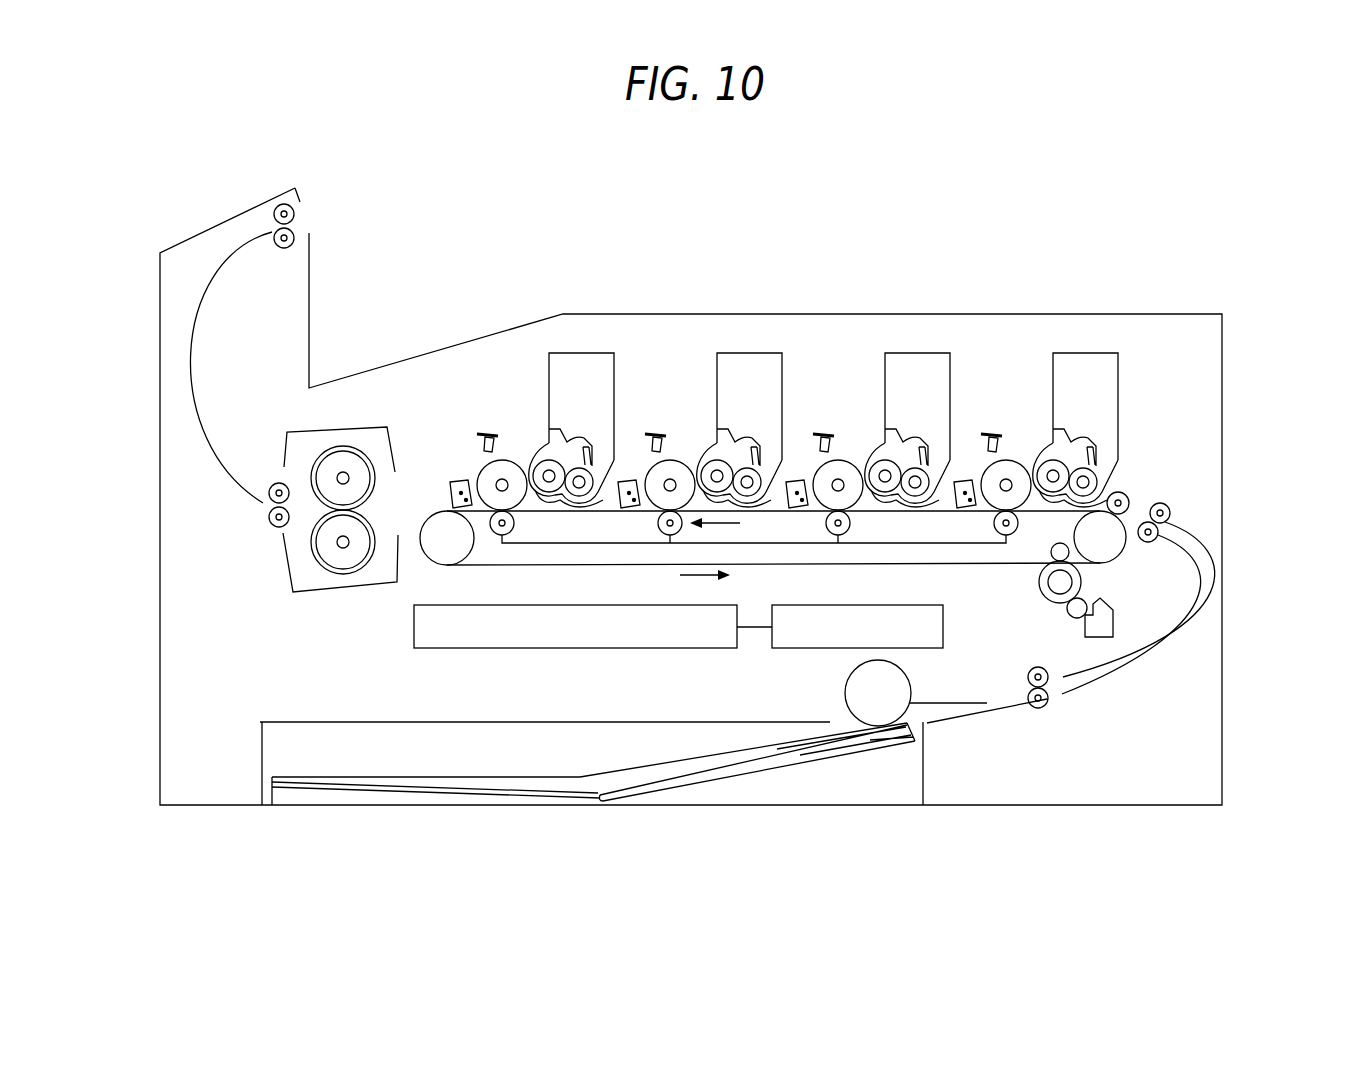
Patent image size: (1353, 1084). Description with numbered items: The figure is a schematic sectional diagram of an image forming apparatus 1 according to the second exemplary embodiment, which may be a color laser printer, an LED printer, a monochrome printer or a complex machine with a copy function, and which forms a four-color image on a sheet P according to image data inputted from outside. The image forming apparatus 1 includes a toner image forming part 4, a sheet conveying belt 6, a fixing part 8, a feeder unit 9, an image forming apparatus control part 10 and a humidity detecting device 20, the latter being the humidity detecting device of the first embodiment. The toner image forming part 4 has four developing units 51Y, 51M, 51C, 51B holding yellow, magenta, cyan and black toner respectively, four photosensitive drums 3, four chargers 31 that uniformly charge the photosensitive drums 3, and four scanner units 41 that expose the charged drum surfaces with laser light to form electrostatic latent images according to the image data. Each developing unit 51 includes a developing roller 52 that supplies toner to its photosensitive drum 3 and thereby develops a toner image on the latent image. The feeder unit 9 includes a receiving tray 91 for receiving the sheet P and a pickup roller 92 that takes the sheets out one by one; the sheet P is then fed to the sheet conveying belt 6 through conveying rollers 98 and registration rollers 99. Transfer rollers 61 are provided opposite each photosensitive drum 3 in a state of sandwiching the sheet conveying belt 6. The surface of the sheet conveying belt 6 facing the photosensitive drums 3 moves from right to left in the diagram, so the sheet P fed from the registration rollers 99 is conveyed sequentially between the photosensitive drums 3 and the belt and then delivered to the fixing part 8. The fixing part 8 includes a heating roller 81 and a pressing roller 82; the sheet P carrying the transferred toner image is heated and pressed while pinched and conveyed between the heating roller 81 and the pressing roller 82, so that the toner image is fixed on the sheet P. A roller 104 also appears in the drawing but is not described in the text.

The image forming apparatus 1 is at (719, 262).
The photosensitive drum 3 is at (462, 517).
The toner image forming part 4 is at (800, 376).
The sheet conveying belt 6 is at (673, 684).
The fixing part 8 is at (244, 478).
The heating roller 81 is at (327, 478).
The pressing roller 82 is at (332, 537).
The feeder unit 9 is at (723, 788).
The image forming apparatus control part 10 is at (830, 650).
The humidity detecting device 20 is at (548, 653).
The charger 31 is at (455, 470).
The scanner unit 41 is at (491, 432).
The developing unit 51 is at (841, 351).
The developing unit 51B is at (595, 353).
The developing unit 51C is at (747, 353).
The developing unit 51M is at (917, 353).
The developing unit 51Y is at (1082, 353).
The developing roller 52 is at (538, 460).
The transfer roller 61 is at (1007, 535).
The receiving tray 91 is at (923, 758).
The pickup roller 92 is at (883, 708).
The conveying rollers 98 is at (1048, 678).
The registration rollers 99 is at (1170, 513).
The pressure roller 104 is at (1051, 553).
The sheet P is at (590, 785).